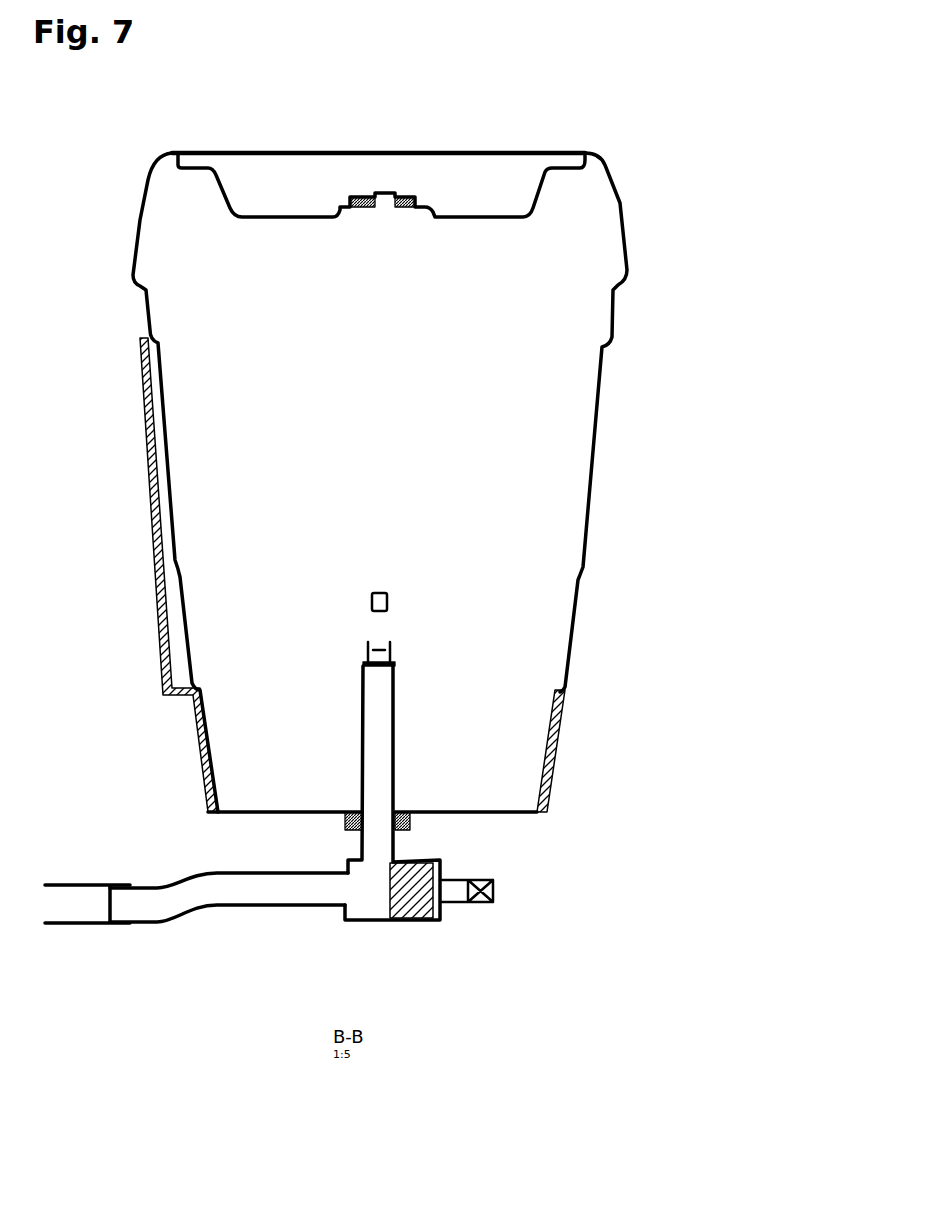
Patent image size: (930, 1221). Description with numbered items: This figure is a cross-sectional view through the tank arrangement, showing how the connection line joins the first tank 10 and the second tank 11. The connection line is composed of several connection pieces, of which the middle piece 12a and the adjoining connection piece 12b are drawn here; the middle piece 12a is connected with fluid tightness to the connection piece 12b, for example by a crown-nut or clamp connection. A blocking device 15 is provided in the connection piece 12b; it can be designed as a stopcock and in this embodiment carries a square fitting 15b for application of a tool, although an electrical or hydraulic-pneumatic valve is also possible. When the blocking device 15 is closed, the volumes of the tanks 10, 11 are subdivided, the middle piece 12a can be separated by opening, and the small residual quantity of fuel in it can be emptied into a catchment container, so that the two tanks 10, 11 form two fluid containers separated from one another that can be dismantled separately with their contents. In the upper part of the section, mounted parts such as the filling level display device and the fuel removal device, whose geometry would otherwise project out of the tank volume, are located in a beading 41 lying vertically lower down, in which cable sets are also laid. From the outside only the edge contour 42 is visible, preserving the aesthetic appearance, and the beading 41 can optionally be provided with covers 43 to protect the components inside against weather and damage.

The first tank 10 is at (459, 584).
The second tank 11 is at (623, 497).
The middle piece 12a is at (65, 910).
The connection piece 12b is at (243, 892).
The blocking device 15 is at (373, 908).
The square fitting 15b is at (480, 895).
The beading 41 is at (453, 217).
The edge contour 42 is at (603, 160).
The cover 43 is at (267, 152).